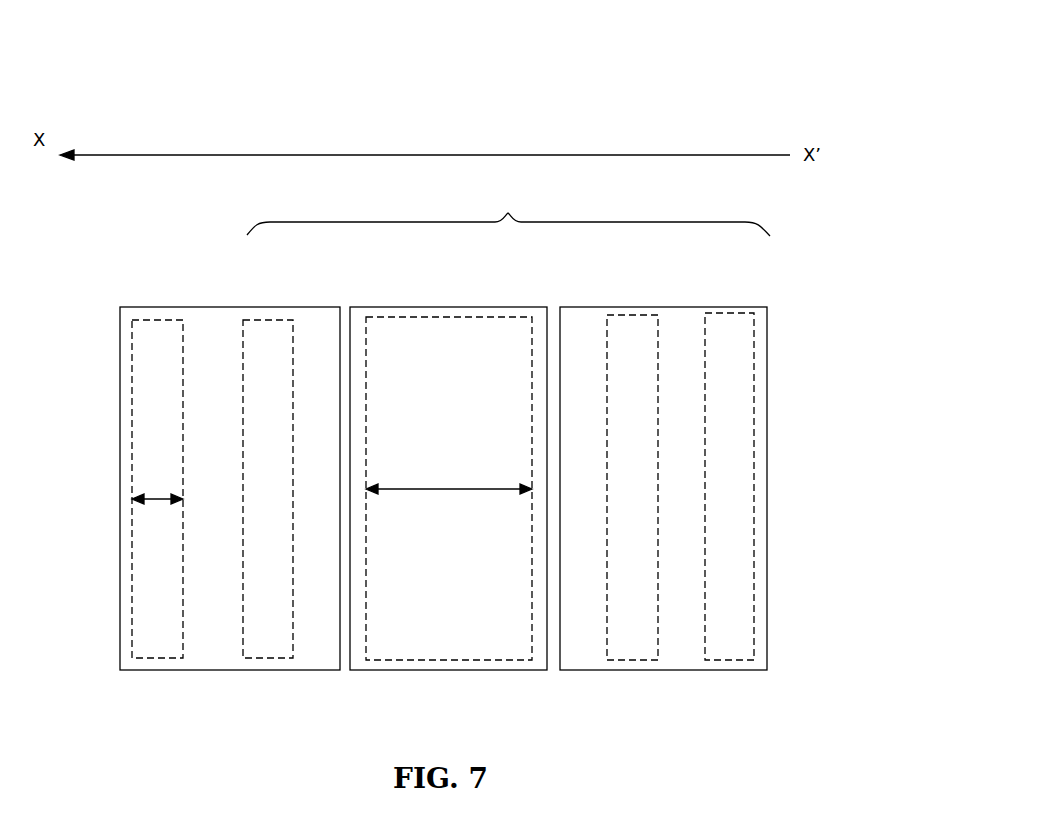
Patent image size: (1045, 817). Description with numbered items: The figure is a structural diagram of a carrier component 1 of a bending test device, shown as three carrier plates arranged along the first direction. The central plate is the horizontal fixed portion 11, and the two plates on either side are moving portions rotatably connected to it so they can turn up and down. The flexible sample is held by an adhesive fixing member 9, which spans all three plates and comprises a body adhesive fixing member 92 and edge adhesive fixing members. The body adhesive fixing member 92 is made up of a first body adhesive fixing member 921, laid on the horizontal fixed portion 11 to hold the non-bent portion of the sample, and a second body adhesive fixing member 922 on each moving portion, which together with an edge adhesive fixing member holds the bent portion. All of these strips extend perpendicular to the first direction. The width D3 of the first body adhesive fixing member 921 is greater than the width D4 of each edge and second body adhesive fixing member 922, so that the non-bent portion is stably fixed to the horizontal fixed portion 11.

The carrier component 1 is at (696, 78).
The adhesive fixing member 9 is at (508, 213).
The horizontal fixed portion 11 is at (440, 672).
The body adhesive fixing member 92 is at (262, 320).
The first body adhesive fixing member 921 is at (468, 317).
The second body adhesive fixing member 922 is at (628, 315).
The width of the first body adhesive fixing member D3 is at (450, 488).
The width of the edge adhesive fixing member and second body adhesive fixing member D4 is at (167, 497).